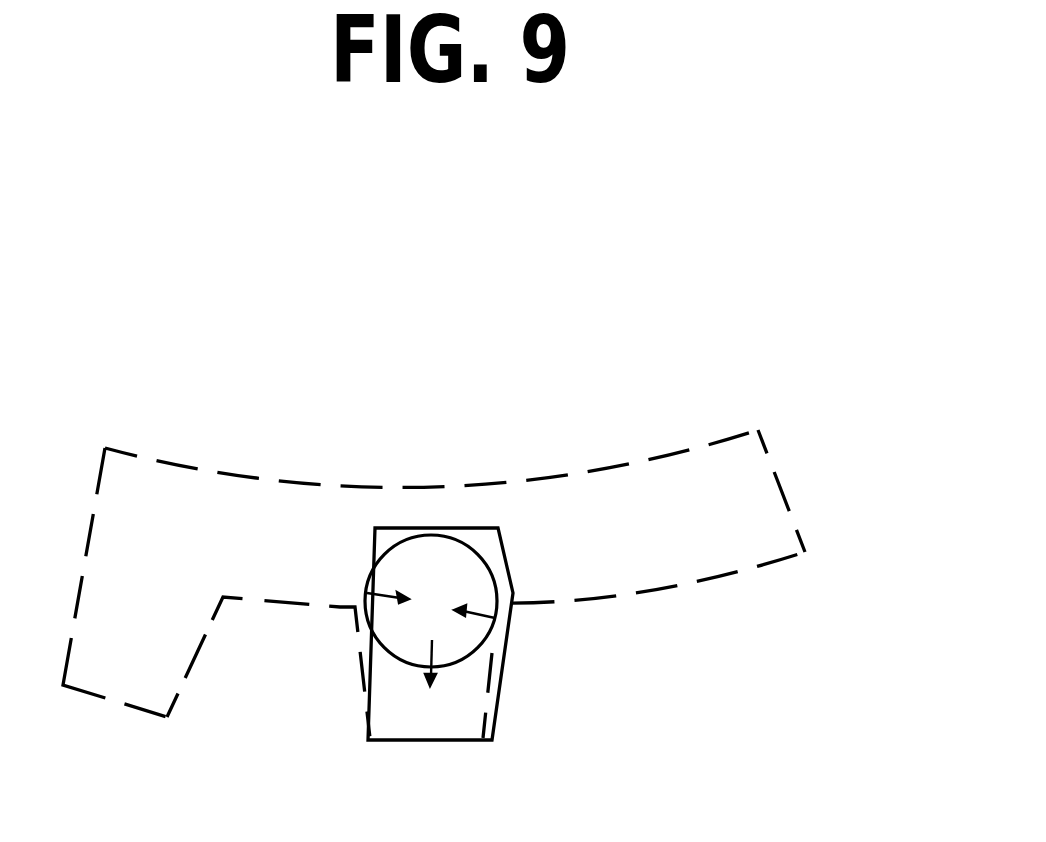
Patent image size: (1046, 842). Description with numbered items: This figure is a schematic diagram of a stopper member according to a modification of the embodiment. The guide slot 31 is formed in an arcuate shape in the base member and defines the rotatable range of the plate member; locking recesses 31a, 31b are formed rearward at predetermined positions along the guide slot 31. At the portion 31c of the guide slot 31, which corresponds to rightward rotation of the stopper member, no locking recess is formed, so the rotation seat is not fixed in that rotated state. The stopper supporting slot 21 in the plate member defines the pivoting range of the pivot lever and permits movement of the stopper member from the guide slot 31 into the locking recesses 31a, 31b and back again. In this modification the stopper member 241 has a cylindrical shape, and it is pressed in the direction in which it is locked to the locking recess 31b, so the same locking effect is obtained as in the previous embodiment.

The stopper supporting slot 21 is at (380, 687).
The stopper member 241 is at (433, 592).
The guide slot 31 is at (682, 505).
The locking recess 31a is at (90, 693).
The locking recess 31b is at (445, 740).
The portion of the guide slot 31c is at (657, 586).